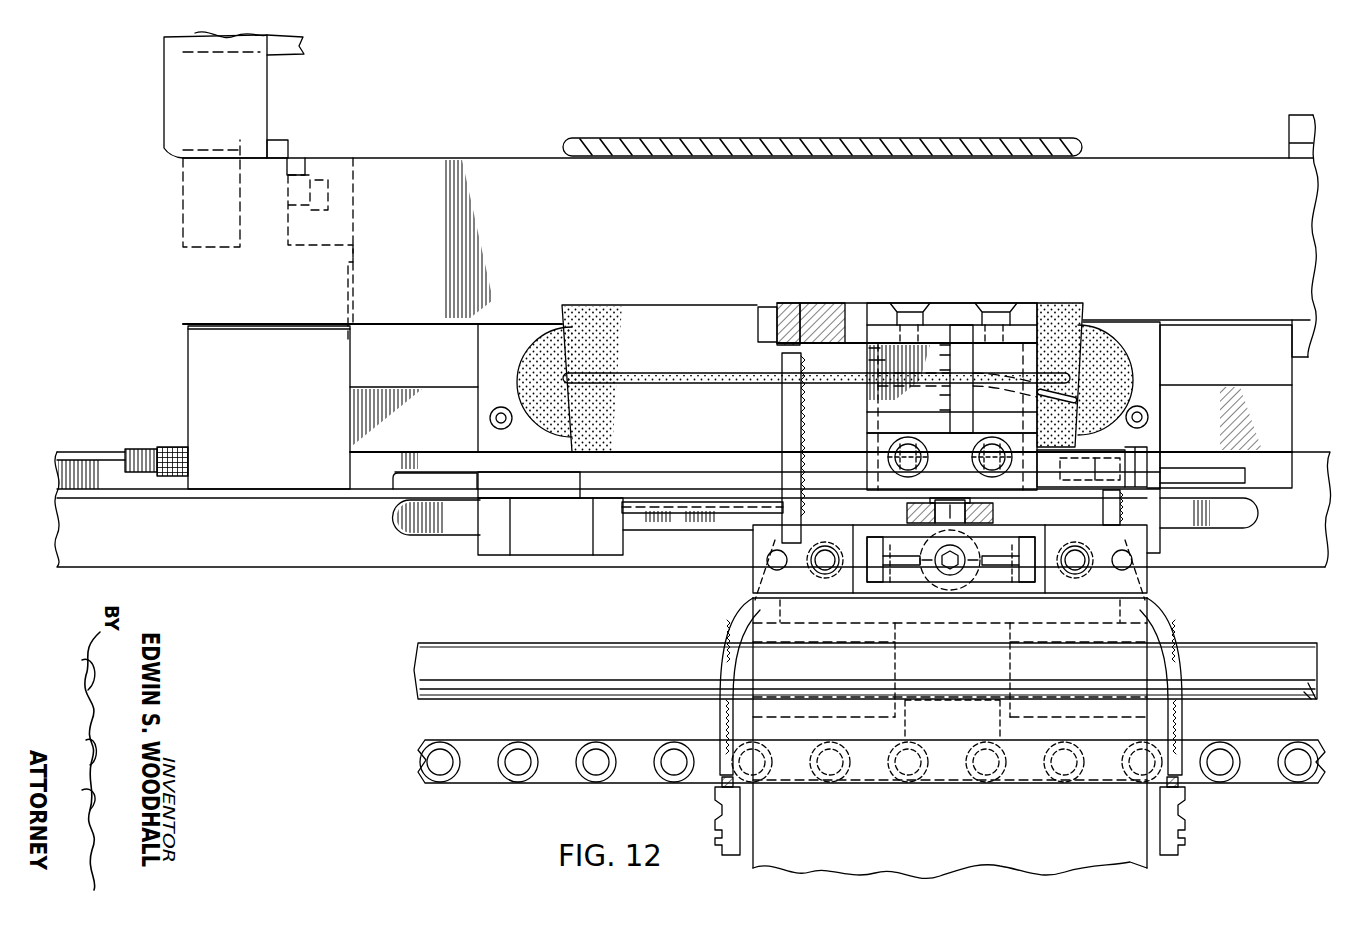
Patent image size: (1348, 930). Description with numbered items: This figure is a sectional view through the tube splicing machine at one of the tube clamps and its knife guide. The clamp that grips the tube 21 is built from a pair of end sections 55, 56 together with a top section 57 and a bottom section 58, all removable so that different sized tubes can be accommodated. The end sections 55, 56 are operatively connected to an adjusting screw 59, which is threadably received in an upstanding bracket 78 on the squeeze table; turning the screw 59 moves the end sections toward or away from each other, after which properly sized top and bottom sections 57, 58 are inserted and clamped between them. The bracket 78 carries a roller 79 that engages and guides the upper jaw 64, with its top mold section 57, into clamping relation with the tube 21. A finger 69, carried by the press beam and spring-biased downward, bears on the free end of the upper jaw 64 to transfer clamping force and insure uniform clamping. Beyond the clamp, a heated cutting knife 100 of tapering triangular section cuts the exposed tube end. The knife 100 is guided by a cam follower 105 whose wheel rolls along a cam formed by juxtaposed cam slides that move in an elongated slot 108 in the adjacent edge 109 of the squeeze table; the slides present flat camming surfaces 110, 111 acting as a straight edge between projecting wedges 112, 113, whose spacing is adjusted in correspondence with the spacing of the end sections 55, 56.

The tube 21 is at (983, 138).
The end section 55 is at (1151, 322).
The end section 56 is at (514, 335).
The top section 57 is at (662, 305).
The bottom section 58 is at (604, 450).
The adjusting screw 59 is at (152, 448).
The upper jaw 64 is at (1192, 156).
The finger 69 is at (267, 106).
The bracket 78 is at (186, 355).
The roller 79 is at (205, 208).
The cutting knife 100 is at (970, 355).
The cam follower 105 is at (931, 503).
The elongated slot 108 is at (1243, 520).
The edge 109 is at (1303, 560).
The camming surface 110 is at (722, 520).
The camming surface 111 is at (678, 500).
The wedge 112 is at (1162, 541).
The wedge 113 is at (620, 545).